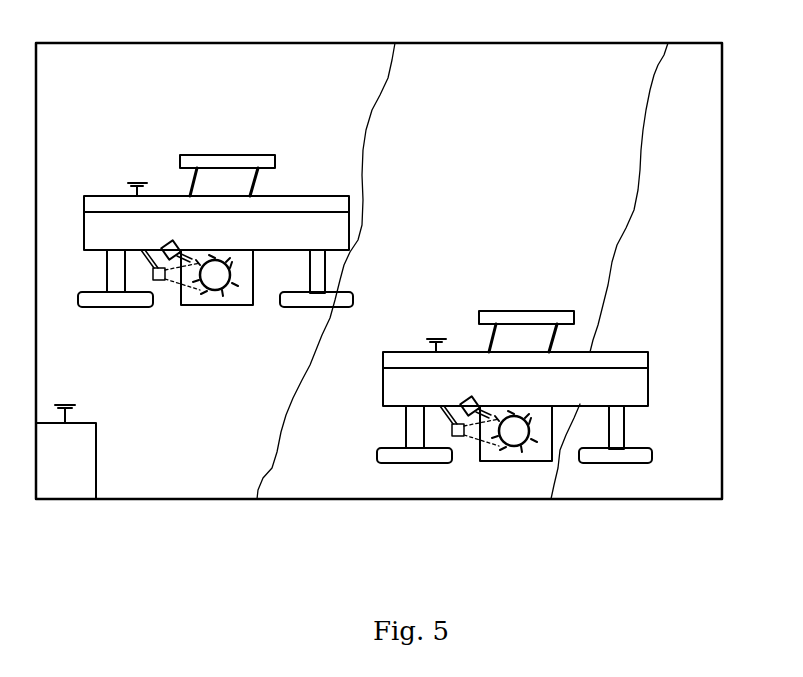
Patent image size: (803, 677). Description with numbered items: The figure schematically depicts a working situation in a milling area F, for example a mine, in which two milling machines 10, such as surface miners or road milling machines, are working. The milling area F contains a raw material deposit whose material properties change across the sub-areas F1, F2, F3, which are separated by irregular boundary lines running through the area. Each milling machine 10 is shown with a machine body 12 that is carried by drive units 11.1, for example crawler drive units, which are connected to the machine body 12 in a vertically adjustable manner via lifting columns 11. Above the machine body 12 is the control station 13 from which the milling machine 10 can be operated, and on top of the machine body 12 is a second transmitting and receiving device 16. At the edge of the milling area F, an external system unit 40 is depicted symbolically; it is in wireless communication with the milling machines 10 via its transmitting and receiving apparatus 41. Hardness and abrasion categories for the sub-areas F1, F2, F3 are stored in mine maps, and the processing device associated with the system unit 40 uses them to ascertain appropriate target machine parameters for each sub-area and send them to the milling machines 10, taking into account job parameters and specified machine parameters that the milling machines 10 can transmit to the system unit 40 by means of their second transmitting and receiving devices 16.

The milling machine 10 is at (322, 190).
The lifting column 11 is at (320, 271).
The drive unit 11.1 is at (296, 304).
The machine body 12 is at (346, 238).
The control station 13 is at (228, 153).
The second transmitting and receiving device 16 is at (133, 194).
The external system unit 40 is at (98, 447).
The transmitting and receiving apparatus 41 is at (80, 410).
The milling area F is at (722, 235).
The sub-area F1 is at (307, 271).
The sub-area F2 is at (581, 271).
The sub-area F3 is at (690, 84).